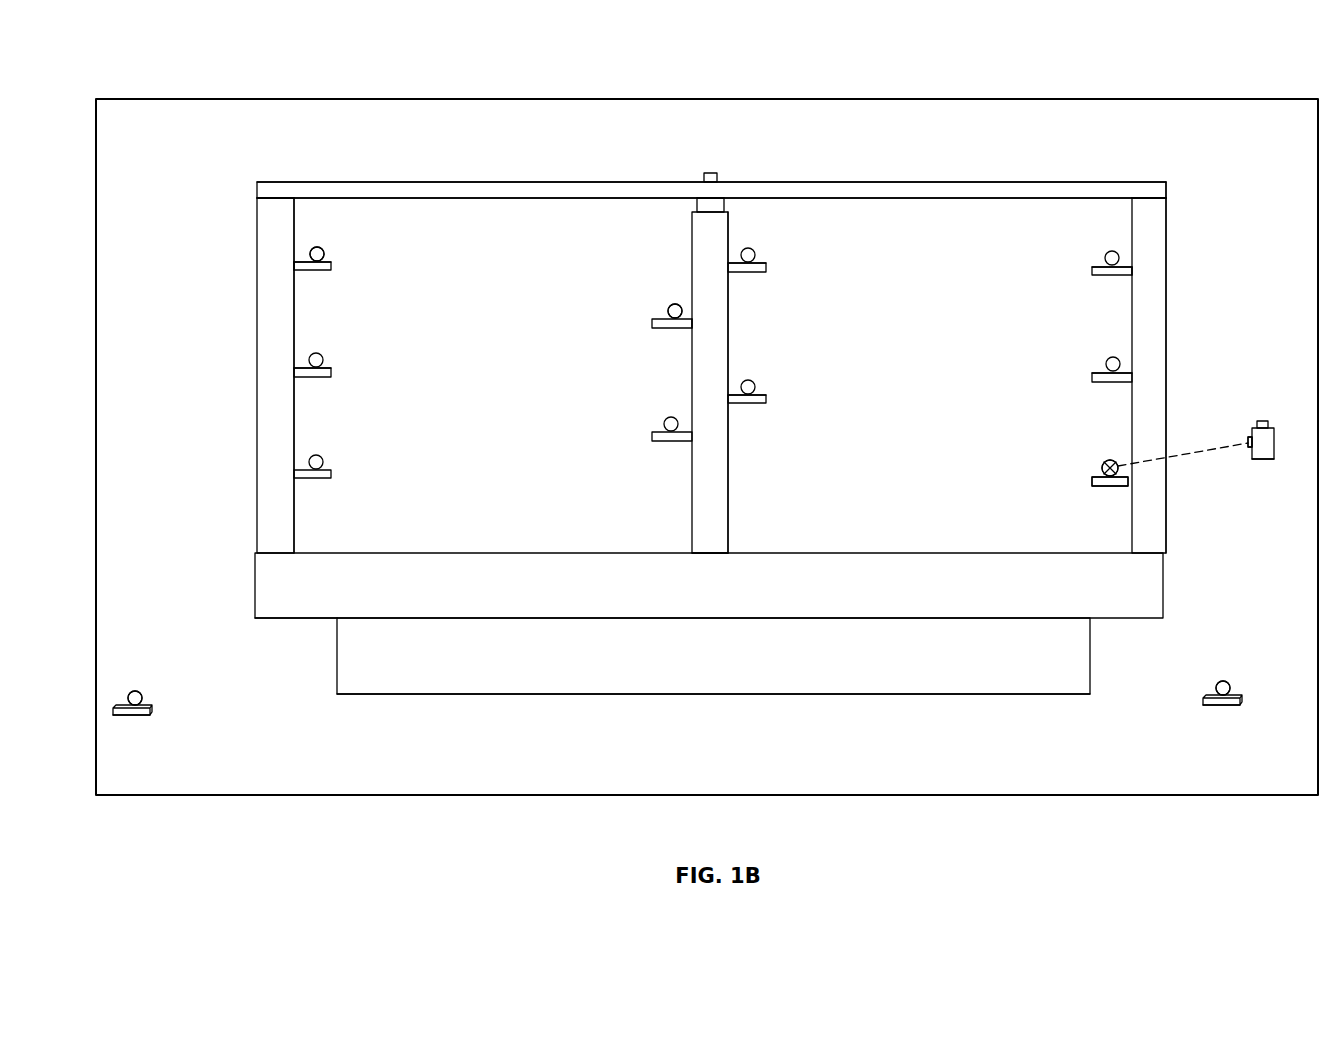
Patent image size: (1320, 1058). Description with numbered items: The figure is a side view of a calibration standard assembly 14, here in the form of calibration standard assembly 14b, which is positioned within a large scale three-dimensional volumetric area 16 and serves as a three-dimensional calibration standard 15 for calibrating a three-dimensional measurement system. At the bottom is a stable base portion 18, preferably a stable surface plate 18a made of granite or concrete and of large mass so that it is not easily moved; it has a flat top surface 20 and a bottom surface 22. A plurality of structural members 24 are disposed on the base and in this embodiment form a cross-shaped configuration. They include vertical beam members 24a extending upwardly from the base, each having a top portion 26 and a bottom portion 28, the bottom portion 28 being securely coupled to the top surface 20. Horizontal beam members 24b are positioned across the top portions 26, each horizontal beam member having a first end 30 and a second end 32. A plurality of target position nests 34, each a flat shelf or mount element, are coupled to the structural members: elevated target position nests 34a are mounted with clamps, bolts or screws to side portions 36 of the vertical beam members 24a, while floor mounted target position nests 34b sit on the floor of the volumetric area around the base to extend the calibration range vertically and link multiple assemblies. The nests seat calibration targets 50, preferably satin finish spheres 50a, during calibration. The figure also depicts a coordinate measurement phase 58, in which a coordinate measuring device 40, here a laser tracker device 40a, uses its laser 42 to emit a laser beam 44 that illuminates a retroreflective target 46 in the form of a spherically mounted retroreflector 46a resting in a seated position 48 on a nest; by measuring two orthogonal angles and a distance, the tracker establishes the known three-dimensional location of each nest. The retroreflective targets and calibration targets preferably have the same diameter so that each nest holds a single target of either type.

The calibration standard assembly 14 is at (1188, 162).
The calibration standard assembly 14b is at (962, 182).
The three-dimensional calibration standard 15 is at (1047, 99).
The large scale three-dimensional volumetric area 16 is at (825, 131).
The stable base portion 18 is at (1105, 632).
The stable surface plate 18a is at (337, 642).
The top surface 20 is at (936, 553).
The bottom surface 22 is at (808, 694).
The structural members 24 is at (1053, 175).
The vertical beam member 24a is at (272, 410).
The horizontal beam member 24b is at (460, 182).
The top portion 26 is at (257, 197).
The bottom portion 28 is at (728, 552).
The first end 30 is at (322, 182).
The second end 32 is at (1166, 188).
The target position nest 34 is at (345, 285).
The elevated target position nest 34a is at (320, 373).
The floor mounted target position nest 34b is at (130, 716).
The side portion 36 is at (294, 262).
The coordinate measuring device 40 is at (1275, 430).
The laser tracker device 40a is at (1266, 460).
The laser 42 is at (1248, 440).
The laser beam 44 is at (1192, 455).
The retroreflective target 46 is at (1090, 480).
The spherically mounted retroreflector (SMR) 46a is at (1101, 465).
The seated position 48 is at (1120, 488).
The calibration target 50 is at (322, 247).
The satin finish sphere 50a is at (324, 254).
The coordinate measurement phase 58 is at (1224, 262).